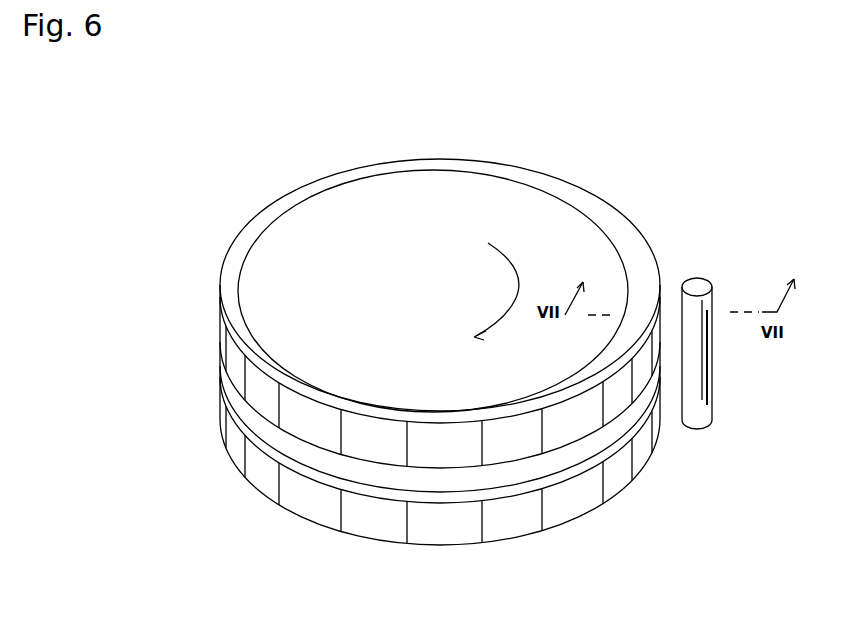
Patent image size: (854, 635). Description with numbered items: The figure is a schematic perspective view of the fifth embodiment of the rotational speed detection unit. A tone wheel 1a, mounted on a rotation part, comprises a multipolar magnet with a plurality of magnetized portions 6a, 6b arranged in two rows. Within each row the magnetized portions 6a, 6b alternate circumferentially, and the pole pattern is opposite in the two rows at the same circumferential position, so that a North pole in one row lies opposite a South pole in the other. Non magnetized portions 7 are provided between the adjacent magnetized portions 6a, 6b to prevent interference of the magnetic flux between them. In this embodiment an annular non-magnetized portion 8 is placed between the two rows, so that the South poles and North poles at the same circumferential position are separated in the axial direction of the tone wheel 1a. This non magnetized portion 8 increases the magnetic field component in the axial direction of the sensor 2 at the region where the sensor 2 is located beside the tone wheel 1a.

The tone wheel 1a is at (584, 200).
The sensor 2 is at (700, 283).
The magnetized portion 6a is at (258, 374).
The magnetized portion 6b is at (372, 424).
The non magnetized portion 7 is at (435, 430).
The annular non-magnetized portion 8 is at (430, 492).